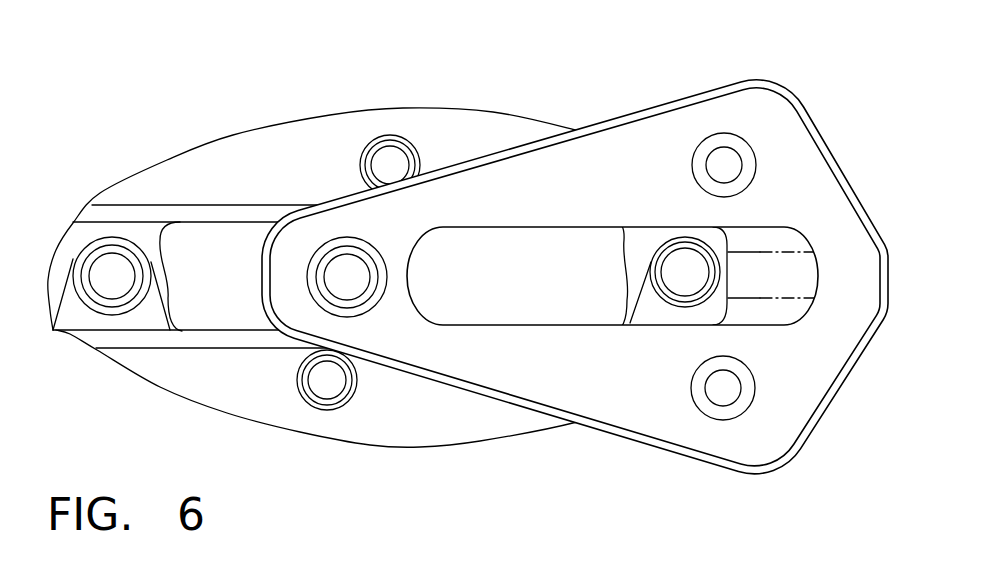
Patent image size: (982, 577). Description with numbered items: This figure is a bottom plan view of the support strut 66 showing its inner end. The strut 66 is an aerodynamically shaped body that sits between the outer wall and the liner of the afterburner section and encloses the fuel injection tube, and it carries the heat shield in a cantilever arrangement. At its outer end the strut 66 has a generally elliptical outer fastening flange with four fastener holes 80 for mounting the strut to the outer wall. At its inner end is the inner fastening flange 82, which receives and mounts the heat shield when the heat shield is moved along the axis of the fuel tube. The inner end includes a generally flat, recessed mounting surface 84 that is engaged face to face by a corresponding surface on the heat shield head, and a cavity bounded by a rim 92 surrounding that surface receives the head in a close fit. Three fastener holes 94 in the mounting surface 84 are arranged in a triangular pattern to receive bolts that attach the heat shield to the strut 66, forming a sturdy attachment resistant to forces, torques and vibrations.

The support strut 66 is at (223, 121).
The fastener holes 80 is at (118, 258).
The inner fastening flange 82 is at (575, 261).
The mounting surface 84 is at (600, 181).
The rim 92 is at (721, 97).
The fastener holes 94 is at (326, 268).